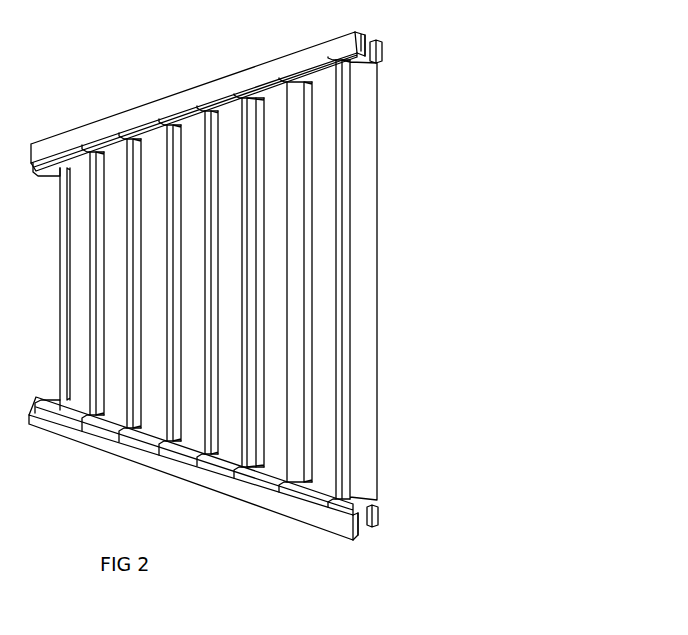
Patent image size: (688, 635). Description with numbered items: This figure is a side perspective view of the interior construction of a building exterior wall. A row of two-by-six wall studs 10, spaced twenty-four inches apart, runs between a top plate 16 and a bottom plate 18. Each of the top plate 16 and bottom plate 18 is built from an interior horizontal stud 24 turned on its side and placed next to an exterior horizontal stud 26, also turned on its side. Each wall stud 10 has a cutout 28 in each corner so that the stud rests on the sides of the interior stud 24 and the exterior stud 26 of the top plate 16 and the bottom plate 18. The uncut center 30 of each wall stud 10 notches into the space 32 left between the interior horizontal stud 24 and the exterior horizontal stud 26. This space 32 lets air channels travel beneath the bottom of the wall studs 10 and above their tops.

The wall stud 10 is at (218, 280).
The top plate 16 is at (405, 49).
The bottom plate 18 is at (392, 524).
The interior horizontal stud 24 is at (47, 170).
The exterior horizontal stud 26 is at (195, 108).
The cutout 28 is at (378, 63).
The uncut center 30 is at (366, 34).
The space 32 is at (93, 150).